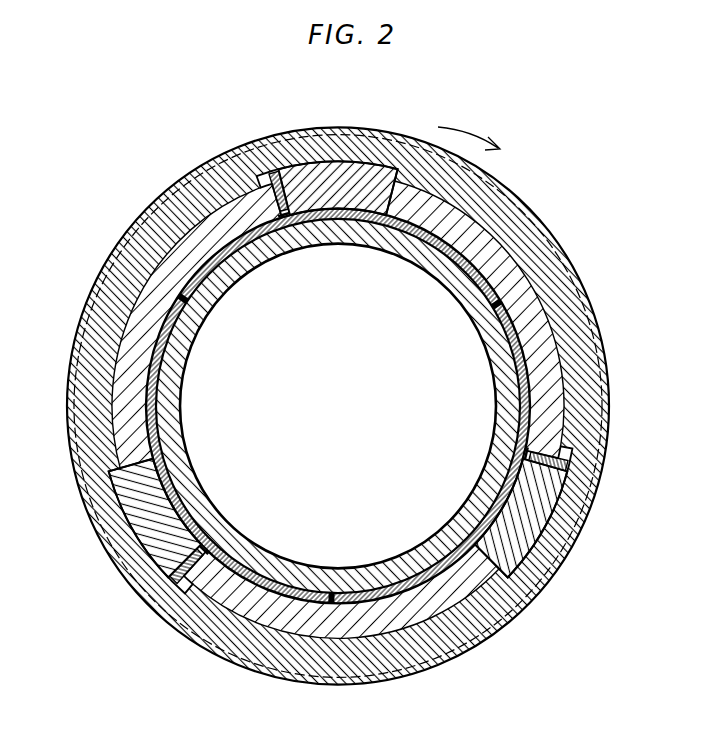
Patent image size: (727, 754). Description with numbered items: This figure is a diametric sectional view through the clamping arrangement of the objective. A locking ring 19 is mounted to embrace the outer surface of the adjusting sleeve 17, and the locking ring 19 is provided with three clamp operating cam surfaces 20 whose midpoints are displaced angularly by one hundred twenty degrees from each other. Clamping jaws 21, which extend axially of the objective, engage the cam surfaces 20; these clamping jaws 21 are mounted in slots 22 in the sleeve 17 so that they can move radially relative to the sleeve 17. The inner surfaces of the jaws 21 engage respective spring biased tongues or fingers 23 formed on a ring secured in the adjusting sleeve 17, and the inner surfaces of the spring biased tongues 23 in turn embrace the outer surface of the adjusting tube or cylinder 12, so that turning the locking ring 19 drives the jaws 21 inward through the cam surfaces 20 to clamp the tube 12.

The adjusting tube 12 is at (178, 410).
The sleeve 17 is at (127, 330).
The locking ring 19 is at (83, 375).
The cam surfaces 20 is at (283, 176).
The clamping jaws 21 is at (375, 182).
The slots 22 is at (293, 214).
The spring biased tongues 23 is at (189, 296).